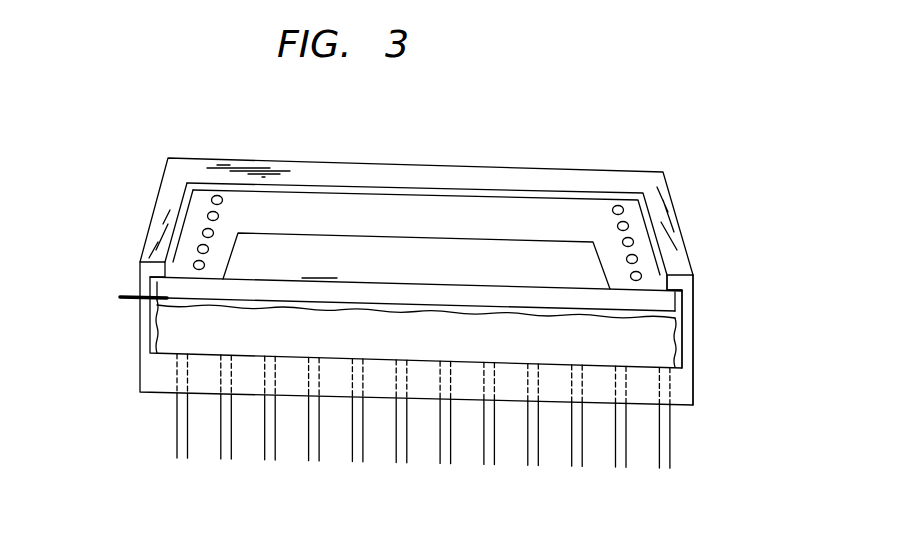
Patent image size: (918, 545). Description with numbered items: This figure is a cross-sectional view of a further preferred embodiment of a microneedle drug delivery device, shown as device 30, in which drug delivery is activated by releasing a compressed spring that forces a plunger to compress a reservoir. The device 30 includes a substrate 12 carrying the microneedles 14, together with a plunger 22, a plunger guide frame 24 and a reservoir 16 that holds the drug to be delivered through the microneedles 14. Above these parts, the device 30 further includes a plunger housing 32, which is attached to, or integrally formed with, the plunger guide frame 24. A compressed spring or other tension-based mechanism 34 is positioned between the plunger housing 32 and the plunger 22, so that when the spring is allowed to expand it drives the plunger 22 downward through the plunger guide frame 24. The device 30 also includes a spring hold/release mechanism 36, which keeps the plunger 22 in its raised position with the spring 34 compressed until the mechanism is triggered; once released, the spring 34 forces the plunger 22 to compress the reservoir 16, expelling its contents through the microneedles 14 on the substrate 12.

The device 30 is at (181, 74).
The substrate 12 is at (695, 387).
The microneedles 14 is at (672, 443).
The reservoir 16 is at (170, 333).
The plunger 22 is at (416, 262).
The plunger guide frame 24 is at (688, 303).
The plunger housing 32 is at (270, 159).
The compressed spring or other tension-based mechanism 34 is at (207, 200).
The spring hold/release mechanism 36 is at (120, 297).